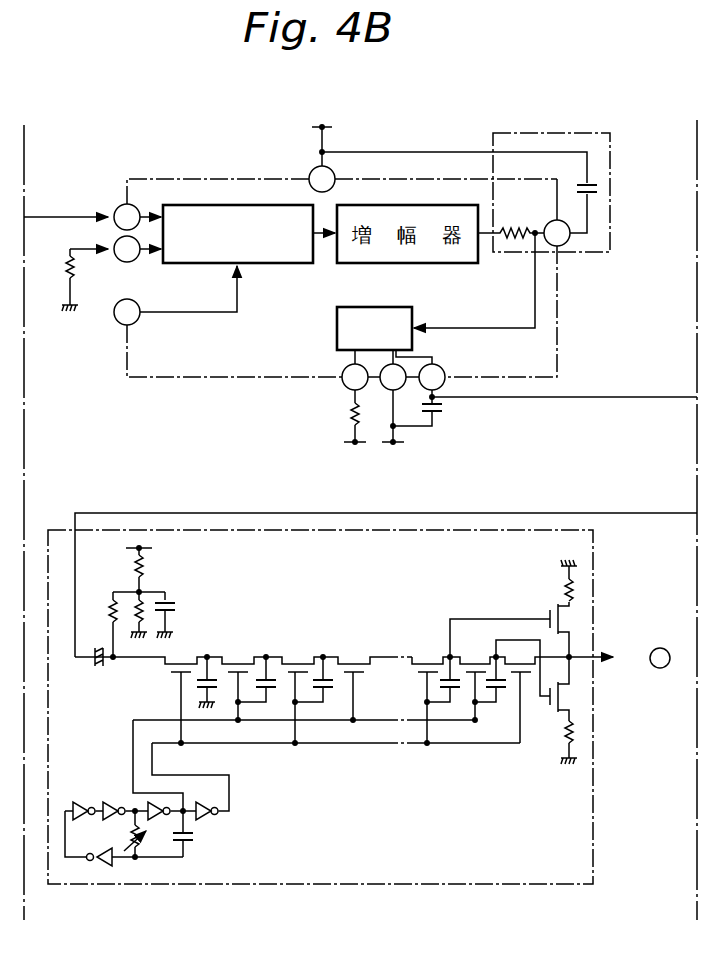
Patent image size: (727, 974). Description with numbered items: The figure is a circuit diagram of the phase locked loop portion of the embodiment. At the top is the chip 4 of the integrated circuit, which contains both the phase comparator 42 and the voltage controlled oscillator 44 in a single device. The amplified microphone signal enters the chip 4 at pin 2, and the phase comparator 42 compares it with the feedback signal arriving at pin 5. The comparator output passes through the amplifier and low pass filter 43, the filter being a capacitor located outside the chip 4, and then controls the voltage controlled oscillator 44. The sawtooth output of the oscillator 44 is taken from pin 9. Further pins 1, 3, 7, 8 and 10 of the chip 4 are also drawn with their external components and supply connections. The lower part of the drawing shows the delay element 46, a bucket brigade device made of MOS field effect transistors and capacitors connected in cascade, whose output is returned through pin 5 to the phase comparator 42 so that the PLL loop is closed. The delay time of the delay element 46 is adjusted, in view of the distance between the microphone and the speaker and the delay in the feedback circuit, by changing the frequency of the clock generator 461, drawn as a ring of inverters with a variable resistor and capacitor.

The PLL IC pin 1 (negative supply) 1 is at (393, 416).
The pin ② of the chip 2 is at (137, 217).
The condenser microphone 3 is at (111, 273).
The chip of the integrated circuit 4 is at (562, 313).
The pin ⑤ of the chip 5 is at (175, 295).
The PLL IC pin 7 (loop filter output) 7 is at (557, 233).
The PLL IC pin 8 (positive supply) 8 is at (355, 416).
The pin ⑨ of the chip 9 is at (545, 395).
The PLL IC pin 10 (supply) 10 is at (322, 148).
The phase comparator 42 is at (270, 264).
The amplifier and low pass filter 43 is at (604, 220).
The voltage controlled oscillator 44 is at (337, 327).
The delay element 46 is at (383, 866).
The clock generator 461 is at (104, 790).